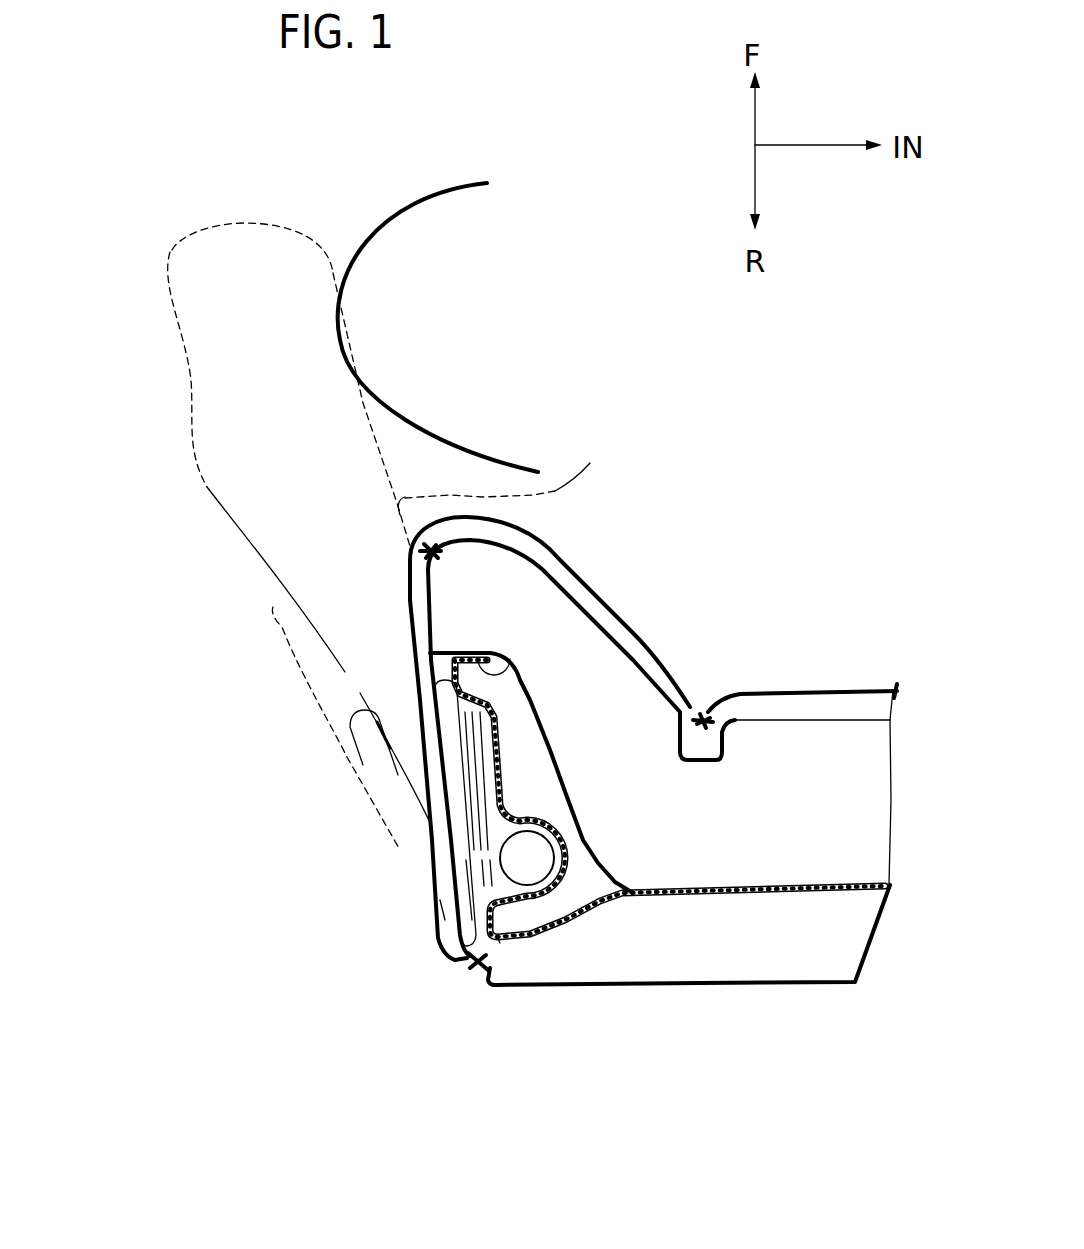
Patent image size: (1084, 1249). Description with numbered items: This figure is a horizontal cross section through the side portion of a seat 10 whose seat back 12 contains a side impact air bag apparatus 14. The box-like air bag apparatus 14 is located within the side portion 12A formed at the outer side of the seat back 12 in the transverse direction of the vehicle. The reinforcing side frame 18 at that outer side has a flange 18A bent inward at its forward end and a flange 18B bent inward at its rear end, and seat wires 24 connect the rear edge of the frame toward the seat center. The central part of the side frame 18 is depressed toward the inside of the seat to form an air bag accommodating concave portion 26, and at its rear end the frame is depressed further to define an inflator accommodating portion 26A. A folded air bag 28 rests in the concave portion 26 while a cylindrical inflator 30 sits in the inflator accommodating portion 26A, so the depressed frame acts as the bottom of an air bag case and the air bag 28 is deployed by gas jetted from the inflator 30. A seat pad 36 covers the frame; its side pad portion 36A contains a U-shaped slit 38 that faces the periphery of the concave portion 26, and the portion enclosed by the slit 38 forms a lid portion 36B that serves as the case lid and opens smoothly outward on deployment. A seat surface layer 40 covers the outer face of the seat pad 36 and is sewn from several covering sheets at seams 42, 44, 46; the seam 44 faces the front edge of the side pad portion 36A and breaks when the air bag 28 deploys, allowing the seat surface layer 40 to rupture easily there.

The seat 10 is at (919, 552).
The seat back 12 is at (856, 689).
The side portion 12A is at (333, 589).
The side impact air bag apparatus 14 is at (437, 848).
The side frame 18 is at (503, 740).
The flange 18A is at (480, 680).
The flange 18B is at (498, 940).
The seat wires 24 is at (791, 900).
The air bag accommodating concave portion 26 is at (478, 782).
The inflator accommodating portion 26A is at (445, 898).
The folded air bag 28 is at (207, 486).
The cylindrical inflator 30 is at (548, 898).
The seat pad 36 is at (822, 718).
The side pad portion 36A is at (433, 604).
The lid portion 36B is at (440, 756).
The U-shaped slit 38 is at (427, 668).
The seat surface layer 40 is at (446, 210).
The seam 42 is at (705, 705).
The seam 44 is at (425, 550).
The seam 46 is at (477, 970).